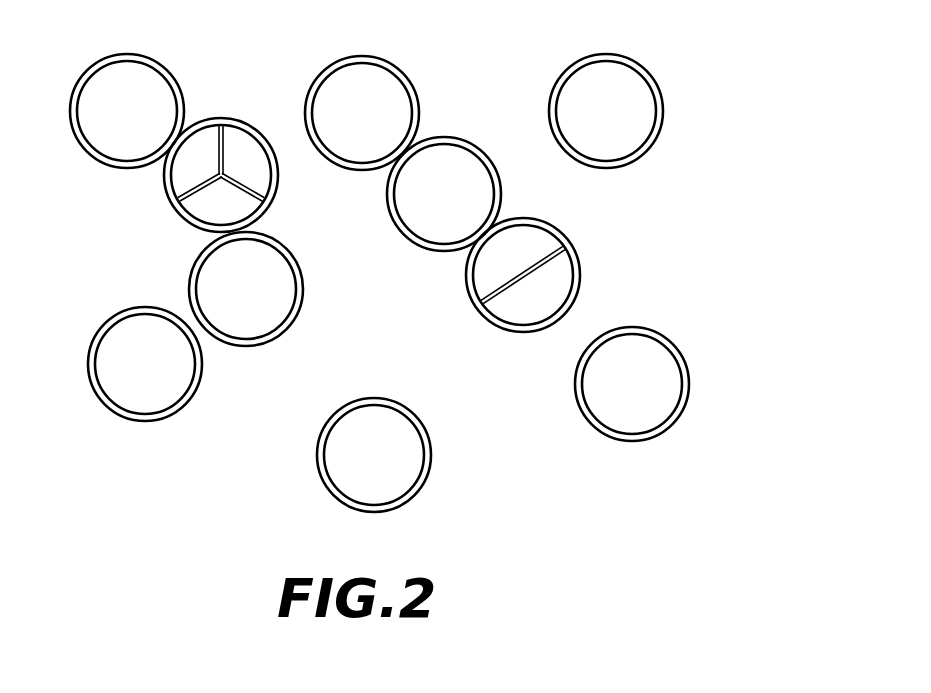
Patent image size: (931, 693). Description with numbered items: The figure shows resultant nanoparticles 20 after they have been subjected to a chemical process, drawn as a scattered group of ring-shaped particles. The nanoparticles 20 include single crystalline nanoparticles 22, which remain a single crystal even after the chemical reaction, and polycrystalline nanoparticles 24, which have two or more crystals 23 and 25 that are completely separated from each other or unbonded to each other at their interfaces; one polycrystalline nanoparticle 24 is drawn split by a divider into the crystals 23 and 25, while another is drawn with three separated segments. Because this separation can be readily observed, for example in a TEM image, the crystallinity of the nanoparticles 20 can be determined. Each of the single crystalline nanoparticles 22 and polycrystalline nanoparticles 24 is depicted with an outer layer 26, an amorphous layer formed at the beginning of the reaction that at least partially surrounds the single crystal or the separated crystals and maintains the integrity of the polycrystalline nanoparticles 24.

The resultant nanoparticles 20 is at (748, 102).
The single crystalline nanoparticles 22 is at (690, 369).
The crystal 23 is at (530, 248).
The polycrystalline nanoparticles 24 is at (170, 204).
The crystal 25 is at (550, 283).
The outer layer 26 is at (515, 325).